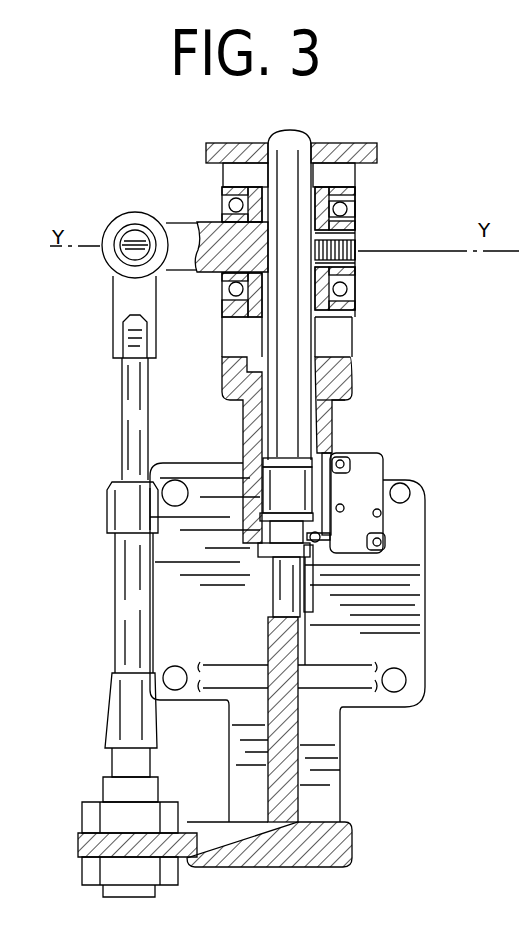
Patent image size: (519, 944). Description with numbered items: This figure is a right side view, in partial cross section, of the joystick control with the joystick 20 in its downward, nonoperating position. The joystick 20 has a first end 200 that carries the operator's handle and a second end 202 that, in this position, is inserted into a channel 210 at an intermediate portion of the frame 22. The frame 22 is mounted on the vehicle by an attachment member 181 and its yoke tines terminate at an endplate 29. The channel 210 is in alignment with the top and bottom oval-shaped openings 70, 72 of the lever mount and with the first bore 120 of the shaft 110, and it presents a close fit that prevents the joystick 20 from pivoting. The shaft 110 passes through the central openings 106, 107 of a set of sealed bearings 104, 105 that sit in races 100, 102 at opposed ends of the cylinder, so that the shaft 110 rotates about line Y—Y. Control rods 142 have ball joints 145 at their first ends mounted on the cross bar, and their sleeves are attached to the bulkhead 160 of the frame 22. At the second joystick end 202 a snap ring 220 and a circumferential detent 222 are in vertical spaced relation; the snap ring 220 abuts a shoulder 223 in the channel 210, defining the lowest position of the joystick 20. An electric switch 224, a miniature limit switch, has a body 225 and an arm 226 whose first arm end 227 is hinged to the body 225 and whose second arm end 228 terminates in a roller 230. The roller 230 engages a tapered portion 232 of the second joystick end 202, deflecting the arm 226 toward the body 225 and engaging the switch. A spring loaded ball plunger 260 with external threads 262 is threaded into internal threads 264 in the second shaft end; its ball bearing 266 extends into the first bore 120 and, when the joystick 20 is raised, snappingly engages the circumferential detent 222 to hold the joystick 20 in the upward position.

The joystick 20 is at (308, 143).
The first end of the joystick 200 is at (270, 135).
The endplate 29 is at (357, 160).
The top oval-shaped opening 70 is at (313, 182).
The sealed bearing 104 is at (220, 197).
The central opening 106 is at (222, 285).
The race 102 is at (355, 200).
The sealed bearing 105 is at (355, 208).
The central opening 107 is at (353, 277).
The first bore 120 is at (355, 232).
The internal threads 264 is at (357, 247).
The spring loaded ball plunger 260 is at (357, 250).
The external threads 262 is at (358, 254).
The race 100 is at (220, 217).
The shaft 110 is at (175, 235).
The ball joint 145 is at (107, 233).
The control rod 142 is at (120, 427).
The bulkhead 160 is at (205, 822).
The bottom oval-shaped opening 72 is at (262, 328).
The ball bearing 266 is at (320, 317).
The channel 210 is at (313, 392).
The second end of the joystick 202 is at (318, 446).
The frame 22 is at (423, 383).
The circumferential detent 222 is at (258, 455).
The shoulder 223 is at (258, 517).
The snap ring 220 is at (258, 552).
The tapered portion 232 is at (273, 562).
The second arm end 228 is at (317, 541).
The roller 230 is at (320, 550).
The arm 226 is at (385, 525).
The first arm end 227 is at (333, 500).
The electric switch 224 is at (412, 486).
The body 225 is at (367, 500).
The attachment member 181 is at (400, 598).